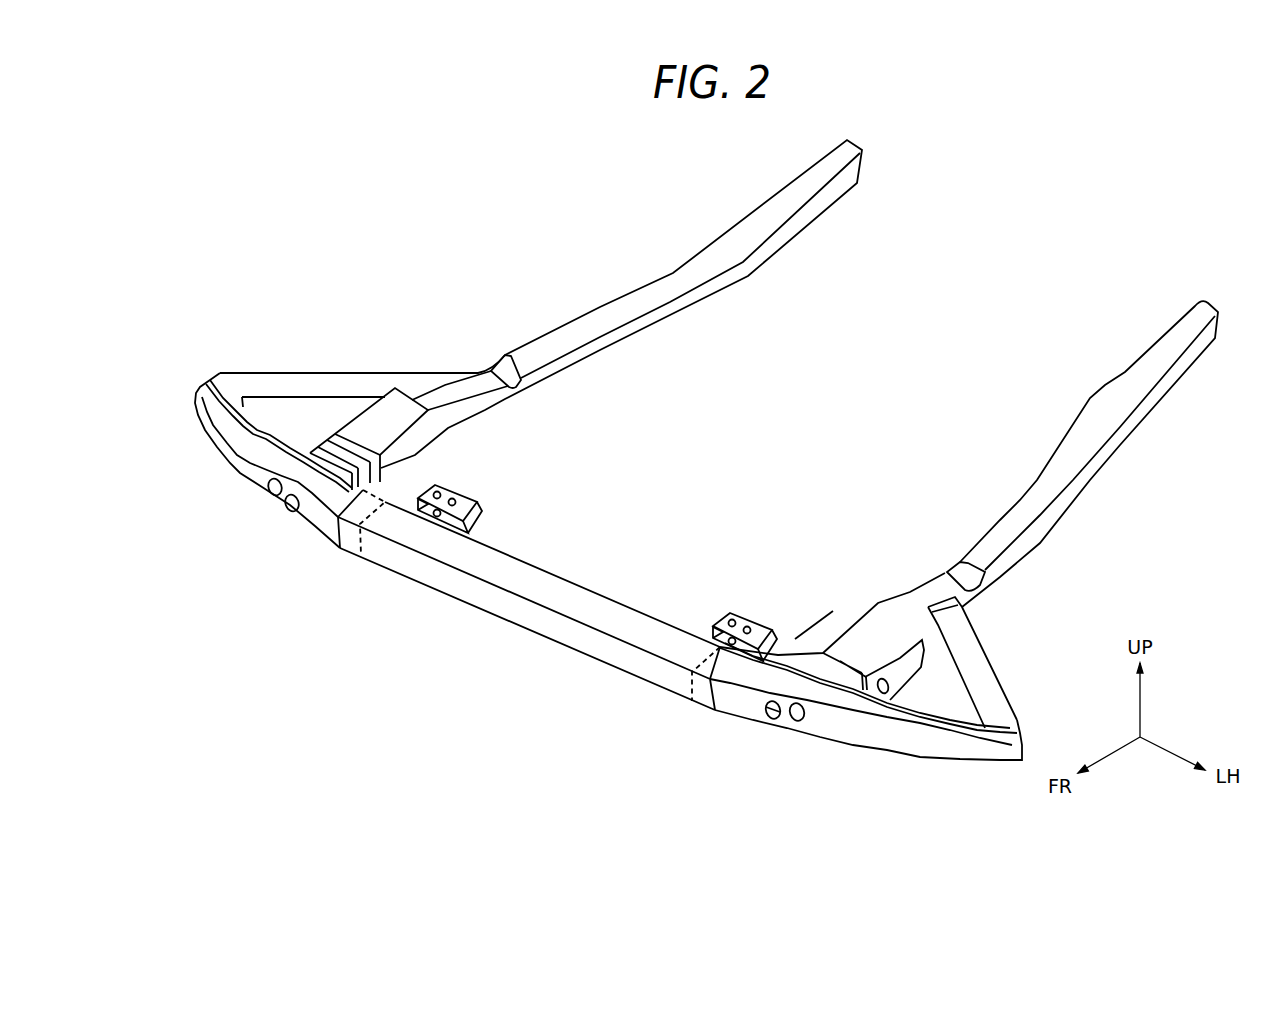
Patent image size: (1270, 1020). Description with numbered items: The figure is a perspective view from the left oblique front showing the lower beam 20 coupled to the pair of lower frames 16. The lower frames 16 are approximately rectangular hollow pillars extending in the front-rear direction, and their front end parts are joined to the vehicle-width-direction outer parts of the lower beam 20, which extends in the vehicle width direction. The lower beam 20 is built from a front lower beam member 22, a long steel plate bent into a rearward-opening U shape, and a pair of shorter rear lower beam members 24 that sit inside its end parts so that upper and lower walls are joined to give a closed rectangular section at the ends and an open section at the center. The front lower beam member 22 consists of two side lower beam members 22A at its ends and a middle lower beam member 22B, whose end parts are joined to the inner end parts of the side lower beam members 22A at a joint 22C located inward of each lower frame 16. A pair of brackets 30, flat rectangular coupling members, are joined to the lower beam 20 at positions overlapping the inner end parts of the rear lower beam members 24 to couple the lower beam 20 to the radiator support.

The lower frame 16 is at (648, 270).
The lower beam 20 is at (591, 560).
The front lower beam member 22 is at (591, 581).
The side lower beam member 22A is at (245, 468).
The middle lower beam member 22B is at (562, 633).
The joint 22C is at (347, 528).
The rear lower beam member 24 is at (272, 437).
The bracket 30 is at (463, 493).